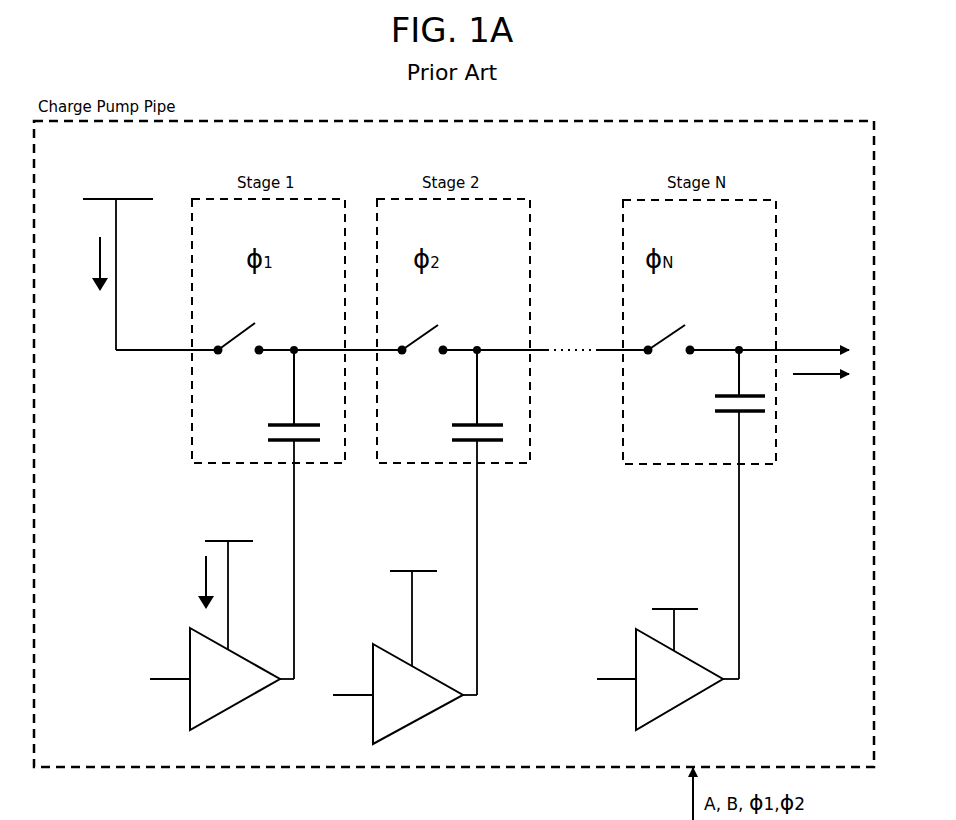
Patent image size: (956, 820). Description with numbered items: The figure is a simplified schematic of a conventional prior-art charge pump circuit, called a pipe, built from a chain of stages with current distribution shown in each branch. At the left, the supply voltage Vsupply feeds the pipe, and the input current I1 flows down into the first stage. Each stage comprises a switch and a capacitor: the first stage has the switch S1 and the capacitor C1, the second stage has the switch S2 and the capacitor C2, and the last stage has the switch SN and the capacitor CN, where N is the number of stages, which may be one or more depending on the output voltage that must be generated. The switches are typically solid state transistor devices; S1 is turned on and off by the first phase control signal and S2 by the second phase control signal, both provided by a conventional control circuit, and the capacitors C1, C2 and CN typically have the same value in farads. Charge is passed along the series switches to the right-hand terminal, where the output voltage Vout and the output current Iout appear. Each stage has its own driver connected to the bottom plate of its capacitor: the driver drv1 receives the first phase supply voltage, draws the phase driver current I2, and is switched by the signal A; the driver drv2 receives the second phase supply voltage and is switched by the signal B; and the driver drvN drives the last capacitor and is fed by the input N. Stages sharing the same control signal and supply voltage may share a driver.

The supply voltage Vsupply is at (146, 260).
The input current I1 is at (90, 264).
The switch S1 is at (235, 336).
The capacitor C1 is at (285, 512).
The switch S2 is at (419, 336).
The capacitor C2 is at (469, 520).
The switch SN is at (665, 336).
The capacitor CN is at (714, 512).
The output voltage Vout is at (769, 334).
The output current Iout is at (821, 389).
The driver drv1 is at (215, 620).
The driver drv2 is at (398, 642).
The driver drvN is at (660, 654).
The phase driver current I2 is at (195, 582).
The switching signal A is at (130, 681).
The switching signal B is at (316, 697).
The number of charge pump stages N is at (577, 682).